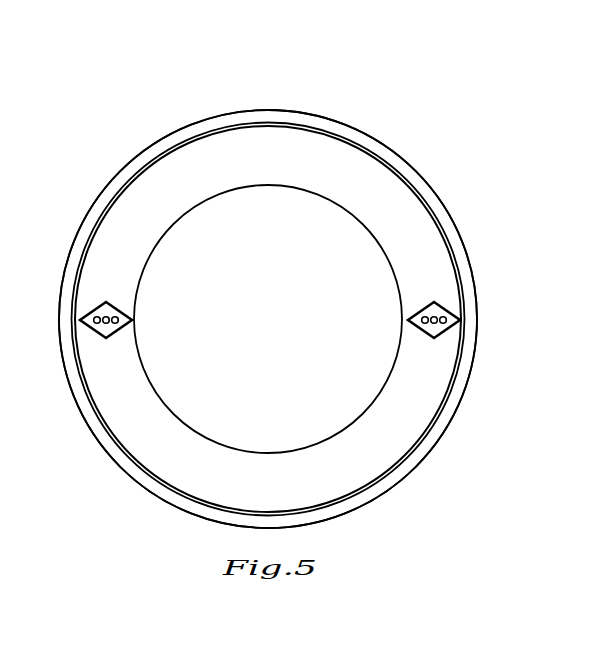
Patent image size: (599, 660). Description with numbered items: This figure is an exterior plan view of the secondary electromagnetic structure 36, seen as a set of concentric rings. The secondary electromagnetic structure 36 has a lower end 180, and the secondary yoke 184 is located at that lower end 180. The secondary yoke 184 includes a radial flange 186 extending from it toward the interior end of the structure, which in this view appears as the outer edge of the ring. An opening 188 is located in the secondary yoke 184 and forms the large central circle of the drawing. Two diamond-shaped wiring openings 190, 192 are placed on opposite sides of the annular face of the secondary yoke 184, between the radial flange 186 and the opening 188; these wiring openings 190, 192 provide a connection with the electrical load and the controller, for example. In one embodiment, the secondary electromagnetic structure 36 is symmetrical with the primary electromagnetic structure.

The secondary electromagnetic structure 36 is at (202, 113).
The lower end 180 is at (430, 412).
The secondary yoke 184 is at (332, 153).
The radial flange 186 is at (410, 167).
The opening 188 is at (370, 237).
The wiring opening 190 is at (118, 306).
The wiring opening 192 is at (421, 305).